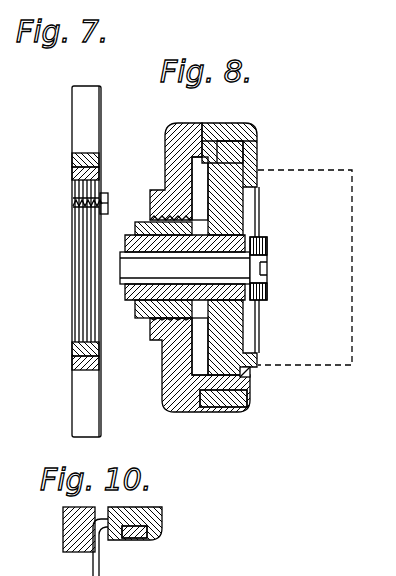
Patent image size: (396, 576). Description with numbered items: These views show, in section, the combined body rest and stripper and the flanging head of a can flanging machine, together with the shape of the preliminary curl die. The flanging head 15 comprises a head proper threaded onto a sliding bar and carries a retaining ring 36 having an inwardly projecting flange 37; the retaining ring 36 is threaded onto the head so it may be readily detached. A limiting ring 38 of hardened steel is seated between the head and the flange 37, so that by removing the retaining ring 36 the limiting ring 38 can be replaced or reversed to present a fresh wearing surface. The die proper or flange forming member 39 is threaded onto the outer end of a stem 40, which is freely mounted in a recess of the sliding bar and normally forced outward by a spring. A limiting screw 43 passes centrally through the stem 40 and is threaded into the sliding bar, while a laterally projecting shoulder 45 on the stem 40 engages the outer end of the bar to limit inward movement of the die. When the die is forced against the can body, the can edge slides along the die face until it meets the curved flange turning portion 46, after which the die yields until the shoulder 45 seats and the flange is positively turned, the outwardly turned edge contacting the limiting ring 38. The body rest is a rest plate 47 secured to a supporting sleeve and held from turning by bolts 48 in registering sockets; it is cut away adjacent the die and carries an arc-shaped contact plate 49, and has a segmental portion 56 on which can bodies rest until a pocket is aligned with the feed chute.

In FIG. 8, the flanging head 15 is at (182, 123).
In FIG. 8, the retaining ring 36 is at (228, 124).
In FIG. 10, the retaining ring 36 is at (160, 520).
In FIG. 8, the flange 37 is at (258, 148).
In FIG. 8, the limiting ring 38 is at (252, 132).
In FIG. 10, the limiting ring 38 is at (118, 536).
In FIG. 8, the flange forming member 39 is at (228, 353).
In FIG. 10, the flange forming member 39 is at (68, 525).
In FIG. 8, the stem 40 is at (242, 233).
In FIG. 8, the limiting screw 43 is at (268, 288).
In FIG. 8, the shoulder 45 is at (182, 348).
In FIG. 8, the curved flange turning portion 46 is at (250, 372).
In FIG. 10, the curved flange turning portion 46 is at (102, 542).
In FIG. 7, the rest plate 47 is at (72, 246).
In FIG. 7, the bolt 48 is at (108, 197).
In FIG. 7, the contact plate 49 is at (101, 134).
In FIG. 7, the segmental portion 56 is at (51, 261).